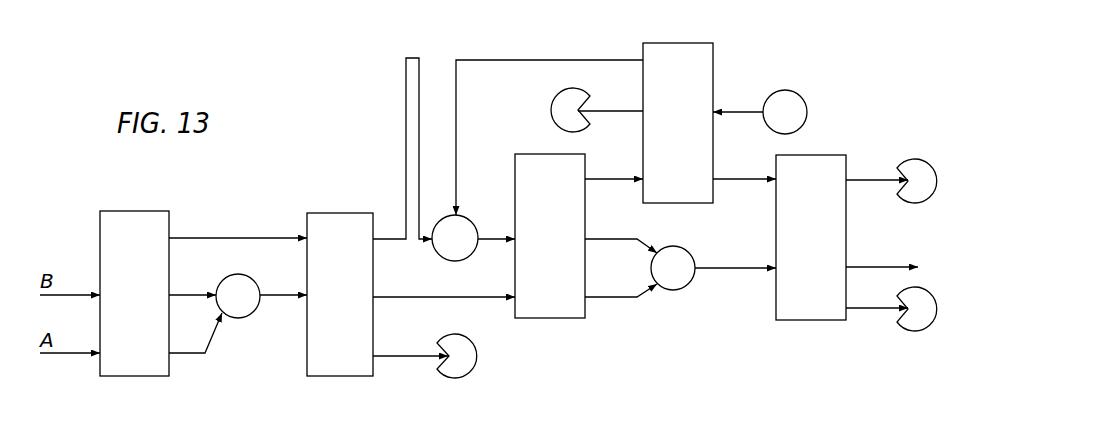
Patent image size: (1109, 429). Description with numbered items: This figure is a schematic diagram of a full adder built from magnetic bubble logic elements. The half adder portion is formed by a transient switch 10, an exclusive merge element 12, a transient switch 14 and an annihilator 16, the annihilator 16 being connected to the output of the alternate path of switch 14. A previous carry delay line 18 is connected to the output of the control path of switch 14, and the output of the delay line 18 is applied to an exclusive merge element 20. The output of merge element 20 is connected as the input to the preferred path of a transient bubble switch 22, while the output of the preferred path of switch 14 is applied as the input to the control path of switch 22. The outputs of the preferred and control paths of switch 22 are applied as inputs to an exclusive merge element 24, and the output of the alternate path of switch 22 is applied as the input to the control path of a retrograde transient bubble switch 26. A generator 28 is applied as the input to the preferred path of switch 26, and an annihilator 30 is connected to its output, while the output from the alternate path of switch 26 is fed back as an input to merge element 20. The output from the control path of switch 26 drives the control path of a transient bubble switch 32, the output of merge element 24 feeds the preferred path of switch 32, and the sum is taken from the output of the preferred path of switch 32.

The transient switch 10 is at (159, 376).
The exclusive merge element 12 is at (247, 314).
The transient switch 14 is at (365, 376).
The annihilator 16 is at (476, 364).
The previous carry delay line 18 is at (405, 62).
The exclusive merge element 20 is at (469, 222).
The transient bubble switch 22 is at (565, 318).
The exclusive merge element 24 is at (683, 287).
The retrograde transient bubble switch 26 is at (713, 54).
The generator 28 is at (807, 112).
The annihilator 30 is at (553, 116).
The transient bubble switch 32 is at (833, 155).